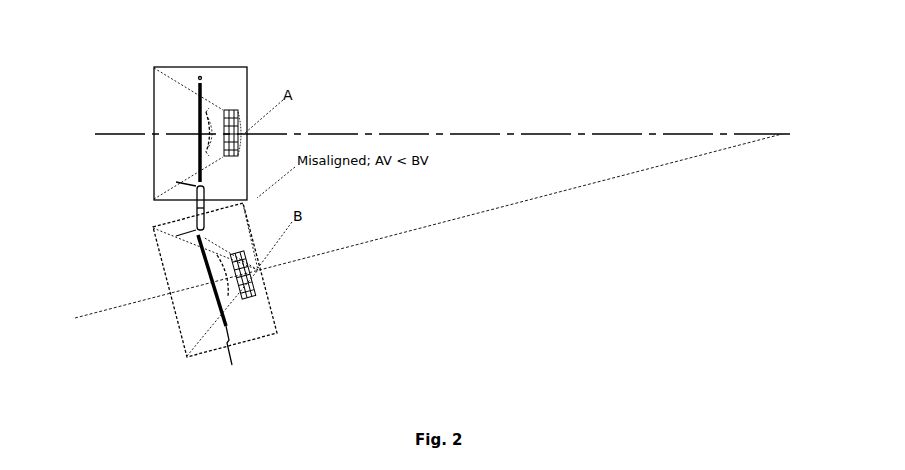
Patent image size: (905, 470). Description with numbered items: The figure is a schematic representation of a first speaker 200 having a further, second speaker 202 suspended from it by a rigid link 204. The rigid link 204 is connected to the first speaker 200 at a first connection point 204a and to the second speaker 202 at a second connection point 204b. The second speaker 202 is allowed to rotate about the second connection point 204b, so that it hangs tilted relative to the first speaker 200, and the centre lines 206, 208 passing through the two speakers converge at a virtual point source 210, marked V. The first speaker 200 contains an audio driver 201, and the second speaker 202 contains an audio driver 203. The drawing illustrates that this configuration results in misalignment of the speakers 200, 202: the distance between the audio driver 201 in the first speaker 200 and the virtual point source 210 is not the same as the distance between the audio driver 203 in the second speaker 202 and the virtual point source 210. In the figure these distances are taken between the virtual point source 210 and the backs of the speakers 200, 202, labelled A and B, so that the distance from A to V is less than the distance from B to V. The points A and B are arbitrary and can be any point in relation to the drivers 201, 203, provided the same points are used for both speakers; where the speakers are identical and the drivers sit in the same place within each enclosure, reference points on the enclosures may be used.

The first speaker 200 is at (229, 108).
The audio driver 201 is at (255, 121).
The second speaker 202 is at (258, 280).
The audio driver 203 is at (226, 314).
The rigid link 204 is at (128, 207).
The first connection point 204a is at (124, 161).
The second connection point 204b is at (124, 257).
The centre line 206 is at (420, 109).
The centre line 208 is at (428, 226).
The virtual point source 210 is at (794, 108).